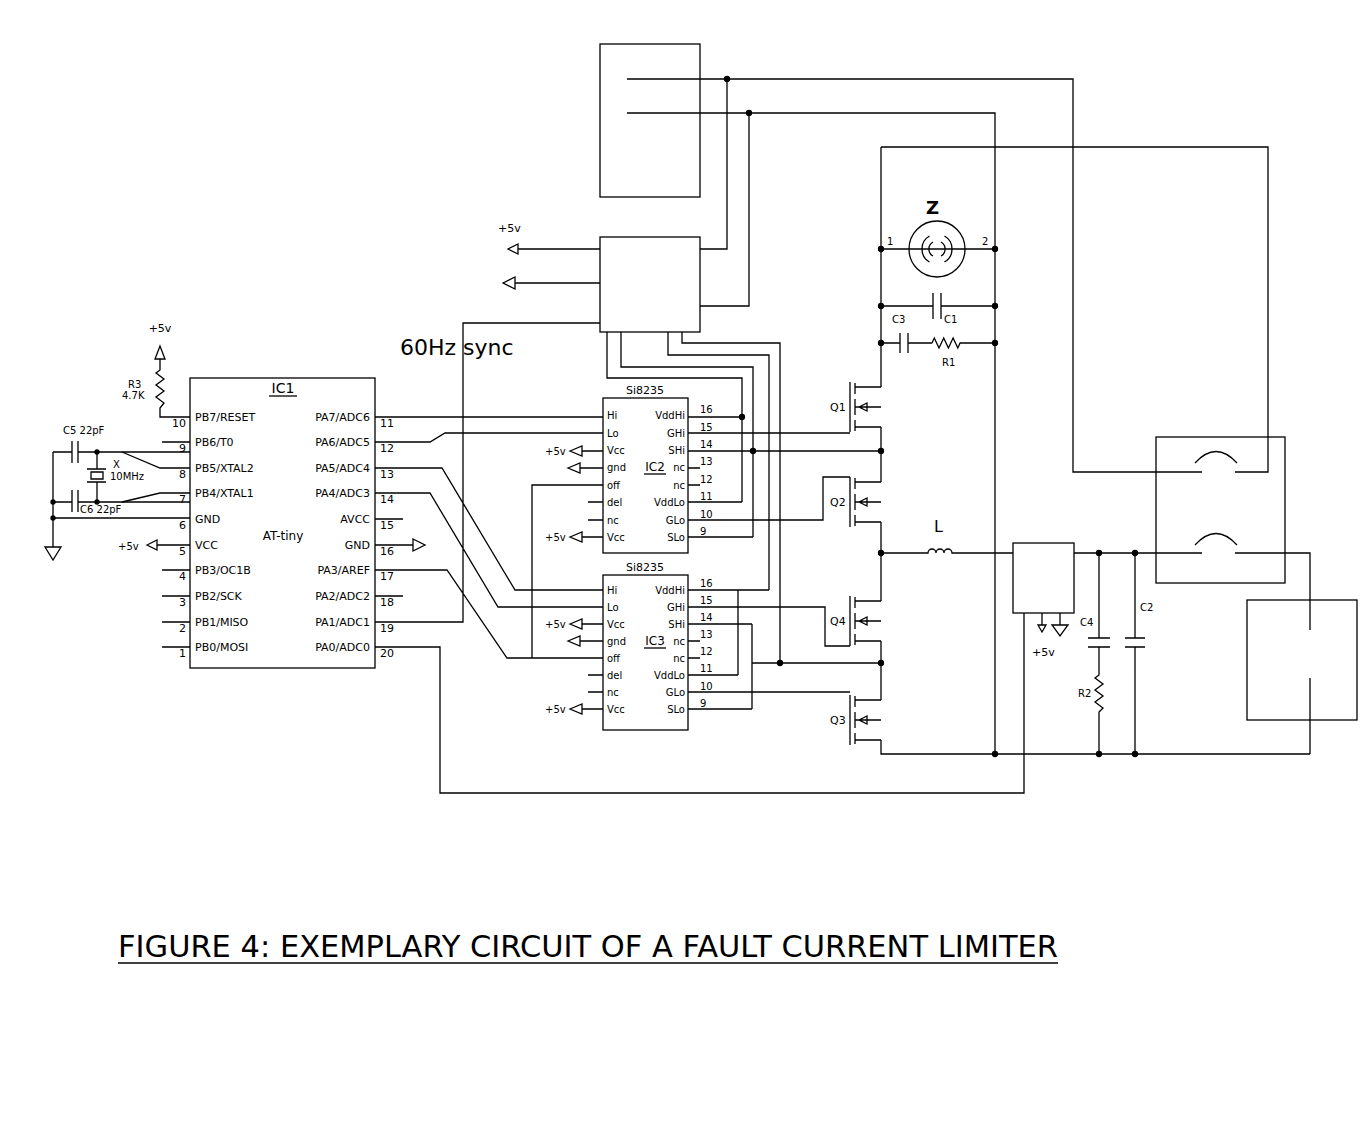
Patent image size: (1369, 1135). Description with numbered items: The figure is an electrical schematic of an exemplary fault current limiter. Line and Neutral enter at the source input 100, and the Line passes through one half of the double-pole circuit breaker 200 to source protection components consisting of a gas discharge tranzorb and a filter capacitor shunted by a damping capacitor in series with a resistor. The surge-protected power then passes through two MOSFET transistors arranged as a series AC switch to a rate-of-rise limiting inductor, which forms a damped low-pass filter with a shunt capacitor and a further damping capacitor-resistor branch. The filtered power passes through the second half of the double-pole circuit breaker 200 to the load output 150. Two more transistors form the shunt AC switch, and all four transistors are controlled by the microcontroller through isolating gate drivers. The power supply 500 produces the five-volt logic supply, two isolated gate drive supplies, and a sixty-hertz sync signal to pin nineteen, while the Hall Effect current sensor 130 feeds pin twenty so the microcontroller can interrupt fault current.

The source input 100 is at (632, 193).
The power supply 500 is at (630, 312).
The Hall Effect current sensor 130 is at (1024, 596).
The double-pole circuit breaker 200 is at (1265, 529).
The load output 150 is at (1265, 686).